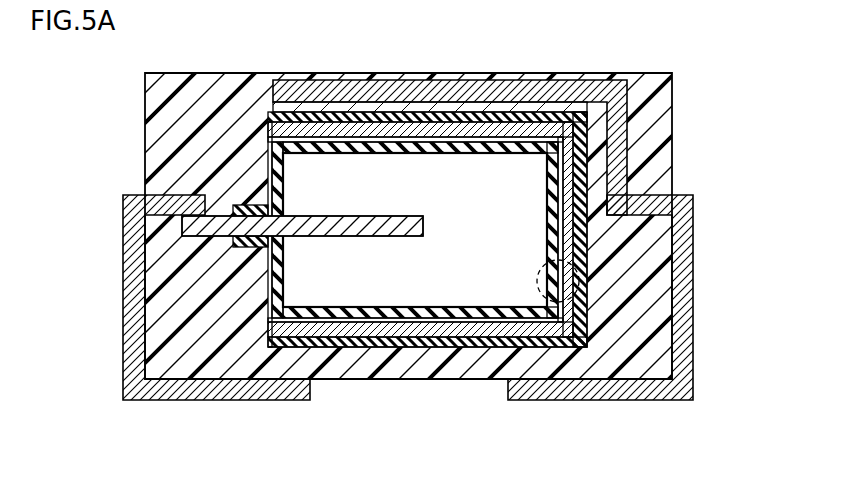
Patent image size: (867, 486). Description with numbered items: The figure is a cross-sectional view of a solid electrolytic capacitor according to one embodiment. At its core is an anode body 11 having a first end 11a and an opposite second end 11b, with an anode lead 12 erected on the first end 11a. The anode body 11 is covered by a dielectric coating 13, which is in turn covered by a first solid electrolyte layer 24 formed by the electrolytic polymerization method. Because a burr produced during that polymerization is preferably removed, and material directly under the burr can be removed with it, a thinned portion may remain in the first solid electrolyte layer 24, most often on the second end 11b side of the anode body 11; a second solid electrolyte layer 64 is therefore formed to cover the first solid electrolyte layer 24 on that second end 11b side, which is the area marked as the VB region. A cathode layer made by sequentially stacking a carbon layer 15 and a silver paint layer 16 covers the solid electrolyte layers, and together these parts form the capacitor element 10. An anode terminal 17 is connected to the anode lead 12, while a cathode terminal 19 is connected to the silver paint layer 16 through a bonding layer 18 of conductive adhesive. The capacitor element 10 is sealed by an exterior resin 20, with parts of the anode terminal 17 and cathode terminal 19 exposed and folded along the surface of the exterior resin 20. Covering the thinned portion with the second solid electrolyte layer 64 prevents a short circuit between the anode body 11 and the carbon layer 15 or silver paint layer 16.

The capacitor element 10 is at (538, 246).
The anode body 11 is at (515, 225).
The first end 11a is at (297, 296).
The second end 11b is at (529, 296).
The anode lead 12 is at (200, 230).
The dielectric coating 13 is at (553, 243).
The carbon layer 15 is at (565, 308).
The silver paint layer 16 is at (587, 333).
The anode terminal 17 is at (127, 276).
The bonding layer 18 is at (508, 107).
The cathode terminal 19 is at (577, 86).
The exterior resin 20 is at (648, 110).
The first solid electrolyte layer 24 is at (560, 272).
The second solid electrolyte layer 64 is at (563, 290).
The VB region VB is at (538, 278).